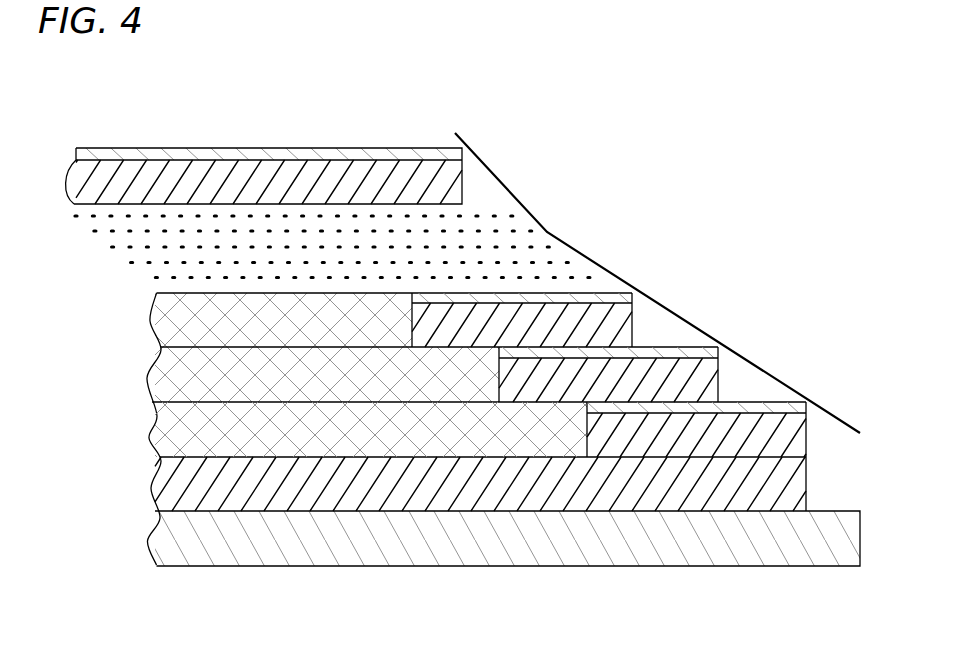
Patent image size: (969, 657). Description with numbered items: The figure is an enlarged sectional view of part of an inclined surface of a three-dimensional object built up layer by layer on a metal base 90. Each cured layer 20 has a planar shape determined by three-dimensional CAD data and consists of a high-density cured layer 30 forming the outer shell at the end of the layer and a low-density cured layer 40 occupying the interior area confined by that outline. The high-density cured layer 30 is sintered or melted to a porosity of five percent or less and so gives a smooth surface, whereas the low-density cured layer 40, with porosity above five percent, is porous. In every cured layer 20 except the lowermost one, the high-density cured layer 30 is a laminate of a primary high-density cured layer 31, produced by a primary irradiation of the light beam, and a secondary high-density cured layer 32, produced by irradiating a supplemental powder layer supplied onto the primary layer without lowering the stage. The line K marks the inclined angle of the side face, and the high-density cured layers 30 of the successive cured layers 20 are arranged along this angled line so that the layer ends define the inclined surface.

The cured layer 20 is at (215, 149).
The high-density cured layer 30 is at (560, 293).
The primary high-density cured layer 31 is at (357, 175).
The secondary high-density cured layer 32 is at (313, 148).
The low-density cured layer 40 is at (280, 440).
The metal base 90 is at (458, 565).
The line denoting inclined angle K is at (513, 190).